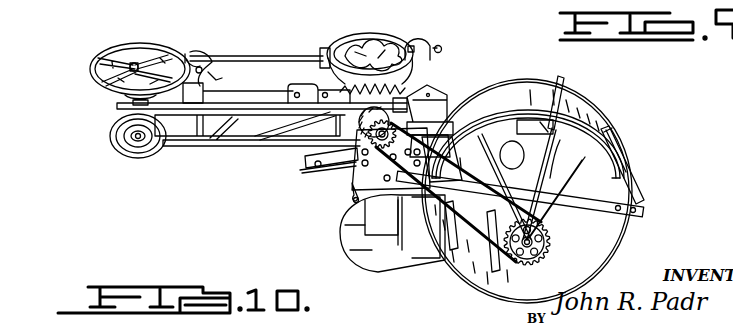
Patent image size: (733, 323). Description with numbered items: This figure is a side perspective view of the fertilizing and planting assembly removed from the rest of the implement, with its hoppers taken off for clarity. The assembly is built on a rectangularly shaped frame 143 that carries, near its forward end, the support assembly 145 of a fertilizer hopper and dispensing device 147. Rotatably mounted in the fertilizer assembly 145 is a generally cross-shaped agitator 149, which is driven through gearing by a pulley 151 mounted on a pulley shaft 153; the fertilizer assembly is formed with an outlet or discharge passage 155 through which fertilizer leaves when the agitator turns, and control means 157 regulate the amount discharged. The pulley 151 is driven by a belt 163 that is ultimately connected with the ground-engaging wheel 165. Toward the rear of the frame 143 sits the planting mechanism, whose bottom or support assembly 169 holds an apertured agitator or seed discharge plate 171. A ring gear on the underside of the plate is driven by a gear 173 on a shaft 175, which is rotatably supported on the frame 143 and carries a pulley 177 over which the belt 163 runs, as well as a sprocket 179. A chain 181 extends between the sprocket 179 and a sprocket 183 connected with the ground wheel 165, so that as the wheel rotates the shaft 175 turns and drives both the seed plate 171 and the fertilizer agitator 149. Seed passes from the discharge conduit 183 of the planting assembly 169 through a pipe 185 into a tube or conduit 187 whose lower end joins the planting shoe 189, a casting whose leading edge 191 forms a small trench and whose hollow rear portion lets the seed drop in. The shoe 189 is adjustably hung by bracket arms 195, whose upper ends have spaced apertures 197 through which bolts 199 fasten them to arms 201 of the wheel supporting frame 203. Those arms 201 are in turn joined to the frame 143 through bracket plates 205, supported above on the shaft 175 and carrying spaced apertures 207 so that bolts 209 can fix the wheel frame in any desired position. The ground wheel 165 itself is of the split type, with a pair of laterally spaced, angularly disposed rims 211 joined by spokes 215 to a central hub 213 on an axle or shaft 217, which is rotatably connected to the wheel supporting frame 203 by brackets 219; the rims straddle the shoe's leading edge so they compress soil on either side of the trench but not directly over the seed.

The frame 143 is at (255, 103).
The fertilizer frame or support assembly 145 is at (110, 97).
The fertilizer hopper and dispensing device 147 is at (84, 100).
The agitator 149 is at (133, 63).
The pulley 151 is at (126, 142).
The pulley shaft 153 is at (138, 142).
The outlet or discharge passage 155 is at (200, 56).
The control means 157 is at (228, 103).
The belt 163 is at (185, 148).
The ground-engaging wheel 165 is at (524, 78).
The bottom or support assembly 169 is at (420, 88).
The agitator or seed discharge plate 171 is at (389, 52).
The gear 173 is at (420, 56).
The shaft 175 is at (330, 120).
The pulley 177 is at (362, 128).
The sprocket 179 is at (440, 122).
The chain 181 is at (345, 213).
The sprocket 183 is at (565, 250).
The pipe 185 is at (410, 104).
The tube or conduit 187 is at (445, 115).
The planting shoe 189 is at (405, 257).
The leading edge 191 is at (345, 257).
The bracket arms 195 is at (380, 265).
The apertures 197 is at (457, 135).
The bolts 199 is at (490, 183).
The arms 201 is at (475, 245).
The wheel supporting frame 203 is at (620, 127).
The bracket plates 205 is at (348, 174).
The apertures 207 is at (330, 162).
The bolts 209 is at (350, 182).
The rims 211 is at (556, 126).
The hub 213 is at (528, 152).
The spokes 215 is at (548, 176).
The axle or shaft 217 is at (528, 250).
The brackets 219 is at (555, 198).